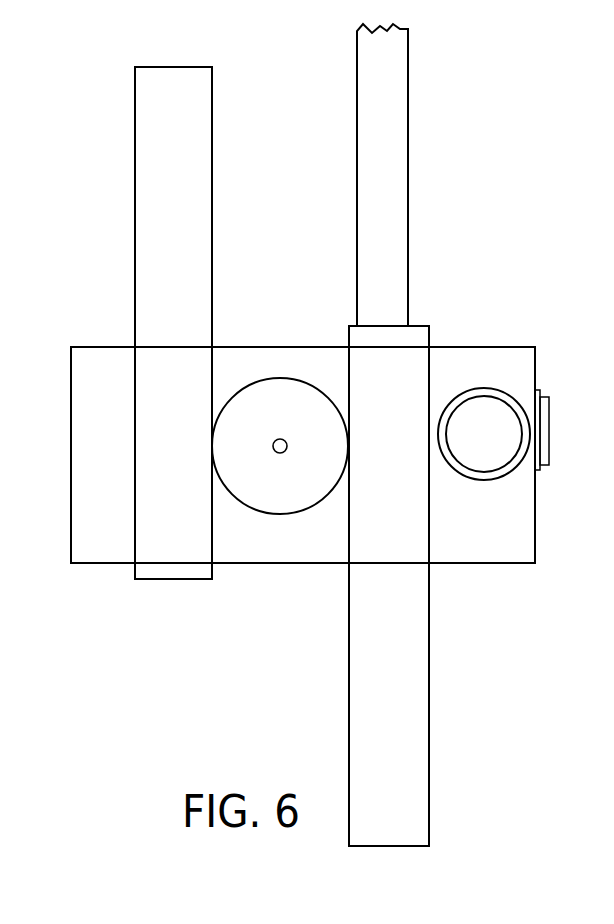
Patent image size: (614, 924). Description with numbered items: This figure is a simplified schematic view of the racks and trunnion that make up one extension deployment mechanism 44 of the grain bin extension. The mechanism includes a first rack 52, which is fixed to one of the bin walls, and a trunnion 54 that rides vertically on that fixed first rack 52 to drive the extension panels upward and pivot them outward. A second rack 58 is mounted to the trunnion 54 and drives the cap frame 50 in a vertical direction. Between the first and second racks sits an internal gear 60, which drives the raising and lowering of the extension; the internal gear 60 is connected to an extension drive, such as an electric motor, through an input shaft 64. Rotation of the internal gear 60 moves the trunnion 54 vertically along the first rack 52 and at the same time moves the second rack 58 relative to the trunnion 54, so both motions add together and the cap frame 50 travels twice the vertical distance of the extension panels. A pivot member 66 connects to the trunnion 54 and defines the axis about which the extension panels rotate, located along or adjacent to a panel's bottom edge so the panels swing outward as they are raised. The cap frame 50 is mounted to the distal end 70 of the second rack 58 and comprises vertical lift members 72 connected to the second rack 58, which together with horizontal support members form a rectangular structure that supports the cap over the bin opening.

The extension deployment mechanism 44 is at (207, 688).
The cap frame 50 is at (408, 129).
The first rack 52 is at (135, 203).
The trunnion 54 is at (295, 563).
The second rack 58 is at (429, 638).
The internal gear 60 is at (263, 377).
The input shaft 64 is at (287, 443).
The pivot member 66 is at (541, 390).
The distal end 70 is at (430, 333).
The vertical lift member 72 is at (408, 234).